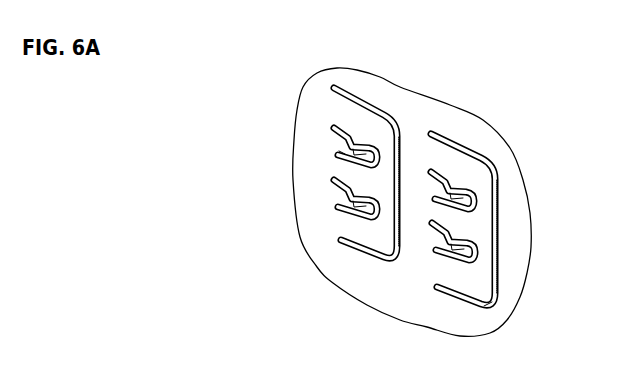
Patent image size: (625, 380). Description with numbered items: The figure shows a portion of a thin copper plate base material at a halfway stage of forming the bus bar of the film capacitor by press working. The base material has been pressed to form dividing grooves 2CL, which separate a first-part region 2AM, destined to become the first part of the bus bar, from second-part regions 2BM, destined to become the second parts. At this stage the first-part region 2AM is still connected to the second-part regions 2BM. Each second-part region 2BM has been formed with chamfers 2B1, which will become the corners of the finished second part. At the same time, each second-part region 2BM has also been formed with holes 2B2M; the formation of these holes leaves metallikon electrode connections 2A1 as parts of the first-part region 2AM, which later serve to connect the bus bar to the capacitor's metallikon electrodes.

The first-part region 2AM is at (298, 122).
The dividing grooves 2CL is at (365, 100).
The second-part regions 2BM is at (392, 138).
The holes 2B2M is at (366, 138).
The metallikon electrode connections 2A1 is at (340, 156).
The chamfers 2B1 is at (488, 304).